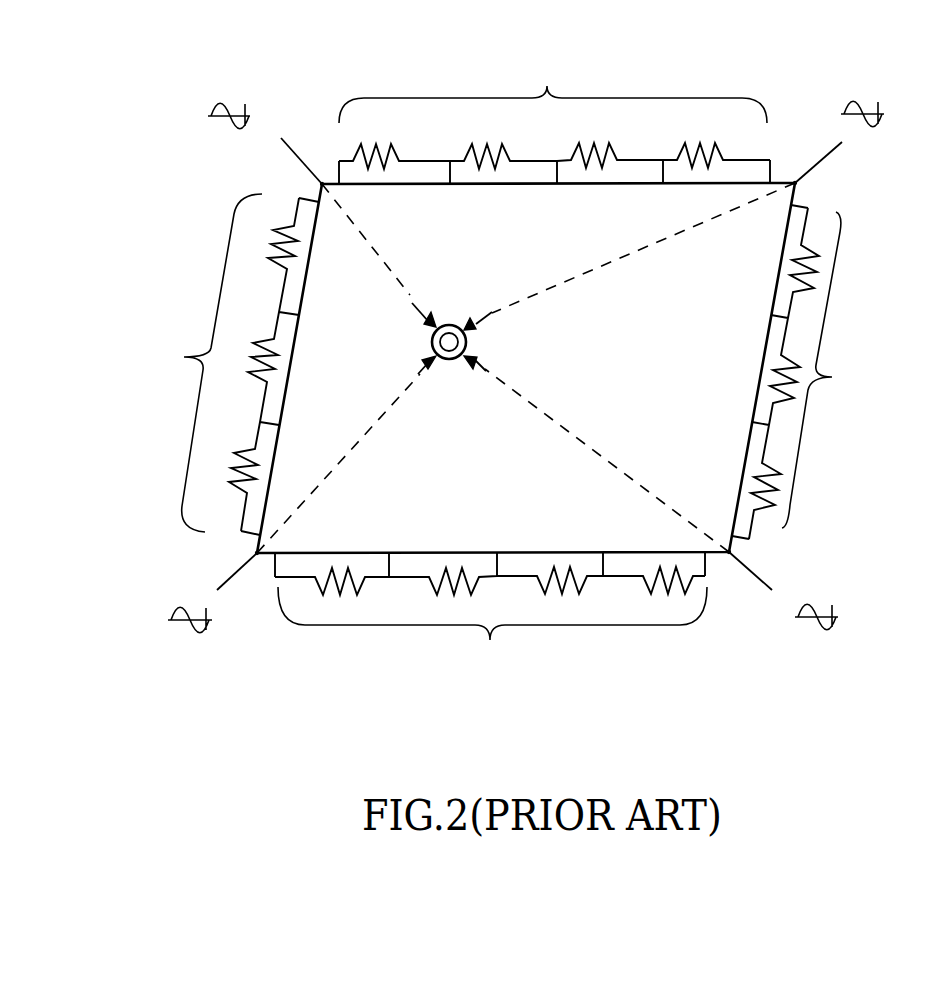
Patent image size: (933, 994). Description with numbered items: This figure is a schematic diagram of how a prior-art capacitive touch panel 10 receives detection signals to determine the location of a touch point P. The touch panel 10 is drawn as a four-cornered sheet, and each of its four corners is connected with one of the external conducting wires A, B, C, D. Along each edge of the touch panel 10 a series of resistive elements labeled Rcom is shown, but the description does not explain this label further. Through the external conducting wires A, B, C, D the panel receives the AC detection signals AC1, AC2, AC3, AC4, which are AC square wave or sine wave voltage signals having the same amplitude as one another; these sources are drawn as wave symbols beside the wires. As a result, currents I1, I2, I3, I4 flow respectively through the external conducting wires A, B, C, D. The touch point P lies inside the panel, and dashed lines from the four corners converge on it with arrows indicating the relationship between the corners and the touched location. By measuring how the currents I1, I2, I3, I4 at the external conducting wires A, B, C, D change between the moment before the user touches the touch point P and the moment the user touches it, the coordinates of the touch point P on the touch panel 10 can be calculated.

The capacitive touch panel 10 is at (248, 753).
The compensation resistor chain Rcom is at (501, 377).
The touch point P is at (526, 368).
The current I1 is at (240, 577).
The current I2 is at (301, 152).
The current I3 is at (811, 155).
The current I4 is at (745, 575).
The external conducting wire A is at (238, 547).
The external conducting wire B is at (297, 175).
The external conducting wire C is at (816, 171).
The external conducting wire D is at (754, 554).
The AC detection signal AC1 is at (184, 643).
The AC detection signal AC2 is at (232, 140).
The AC detection signal AC3 is at (877, 138).
The AC detection signal AC4 is at (819, 637).